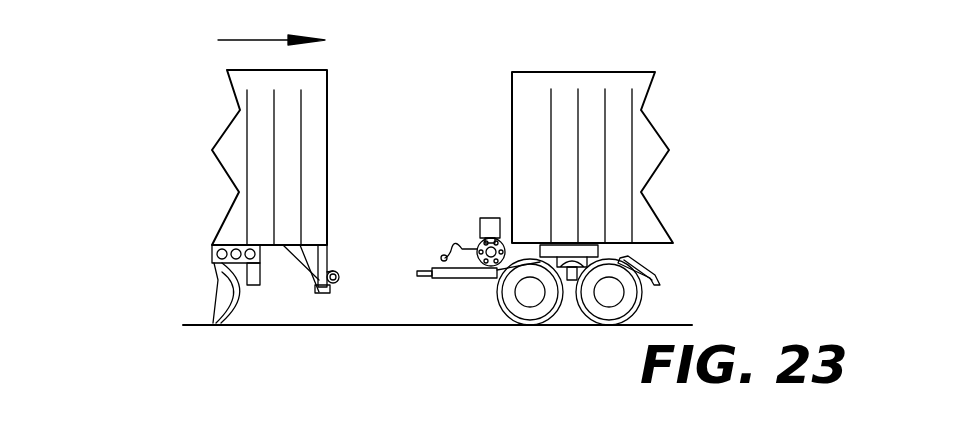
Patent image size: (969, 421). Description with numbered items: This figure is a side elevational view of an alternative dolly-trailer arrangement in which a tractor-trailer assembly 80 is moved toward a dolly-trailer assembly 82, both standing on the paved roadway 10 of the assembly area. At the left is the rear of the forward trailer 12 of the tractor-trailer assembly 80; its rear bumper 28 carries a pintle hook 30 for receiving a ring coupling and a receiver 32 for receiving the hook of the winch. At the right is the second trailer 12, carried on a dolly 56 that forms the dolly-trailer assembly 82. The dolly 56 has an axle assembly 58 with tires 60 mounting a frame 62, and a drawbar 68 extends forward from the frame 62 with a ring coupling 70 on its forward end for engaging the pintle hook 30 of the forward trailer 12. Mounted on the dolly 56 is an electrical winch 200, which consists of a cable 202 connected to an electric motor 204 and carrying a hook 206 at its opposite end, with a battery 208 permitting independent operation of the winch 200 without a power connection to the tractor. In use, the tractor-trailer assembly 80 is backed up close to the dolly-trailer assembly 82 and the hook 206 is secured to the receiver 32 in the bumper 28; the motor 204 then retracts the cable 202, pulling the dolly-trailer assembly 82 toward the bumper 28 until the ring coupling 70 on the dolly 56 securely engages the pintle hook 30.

The roadway 10 is at (322, 325).
The trailer 12 is at (366, 99).
The rear bumper 28 is at (318, 290).
The pintle hook 30 is at (338, 283).
The receiver 32 is at (331, 250).
The dolly 56 is at (688, 283).
The axle assembly 58 is at (610, 295).
The tires 60 is at (632, 320).
The frame 62 is at (492, 279).
The drawbar 68 is at (462, 279).
The ring coupling 70 is at (432, 278).
The tractor-trailer assembly 80 is at (150, 93).
The dolly-trailer assembly 82 is at (757, 130).
The electrical winch 200 is at (441, 152).
The cable 202 is at (455, 247).
The electric motor 204 is at (479, 243).
The hook 206 is at (442, 258).
The battery 208 is at (493, 217).